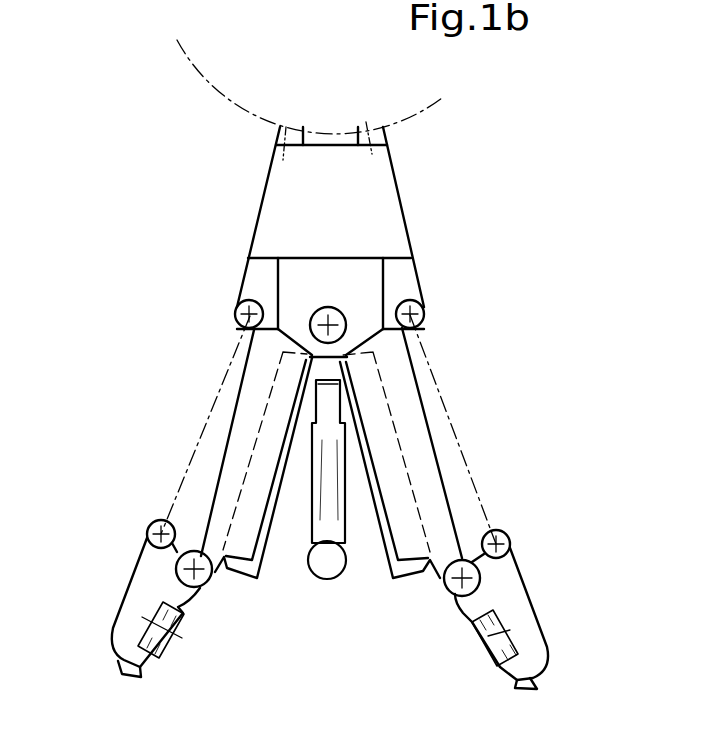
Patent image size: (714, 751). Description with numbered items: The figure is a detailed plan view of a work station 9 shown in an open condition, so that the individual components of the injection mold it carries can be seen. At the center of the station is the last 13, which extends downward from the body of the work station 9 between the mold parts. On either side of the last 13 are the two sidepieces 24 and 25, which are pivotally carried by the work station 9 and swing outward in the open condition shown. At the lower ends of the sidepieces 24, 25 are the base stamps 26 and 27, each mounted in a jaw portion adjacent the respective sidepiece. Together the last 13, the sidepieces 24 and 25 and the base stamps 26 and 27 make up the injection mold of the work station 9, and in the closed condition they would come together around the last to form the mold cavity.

The work station 9 is at (372, 227).
The last 13 is at (333, 463).
The sidepiece 24 is at (388, 530).
The sidepiece 25 is at (280, 485).
The base stamp 26 is at (473, 648).
The base stamp 27 is at (180, 640).